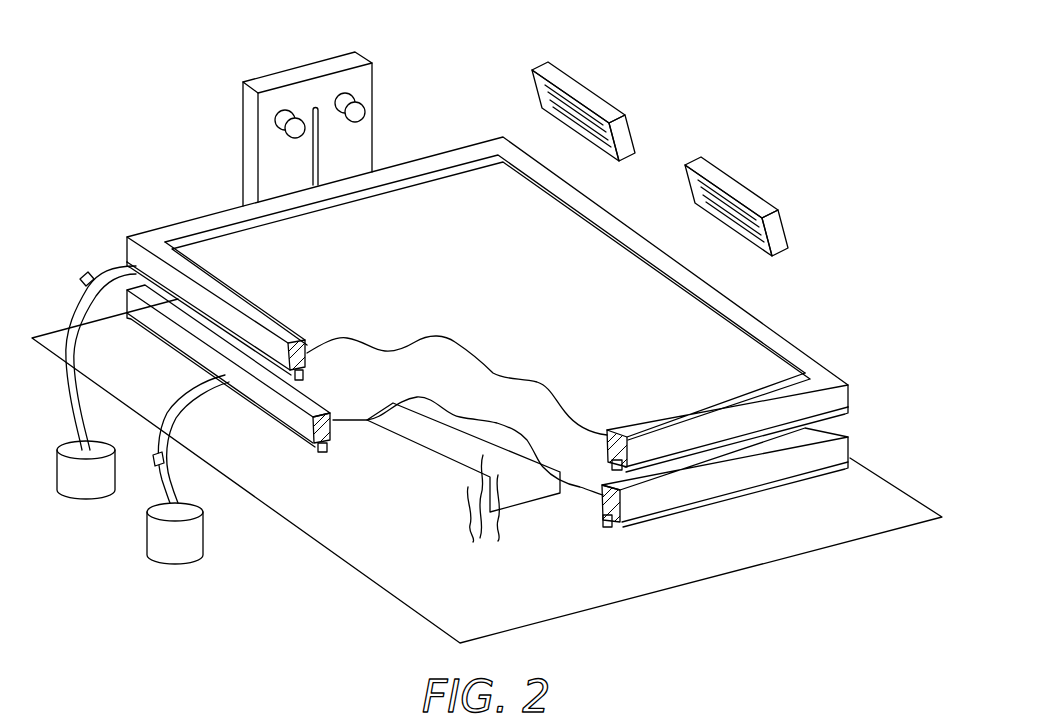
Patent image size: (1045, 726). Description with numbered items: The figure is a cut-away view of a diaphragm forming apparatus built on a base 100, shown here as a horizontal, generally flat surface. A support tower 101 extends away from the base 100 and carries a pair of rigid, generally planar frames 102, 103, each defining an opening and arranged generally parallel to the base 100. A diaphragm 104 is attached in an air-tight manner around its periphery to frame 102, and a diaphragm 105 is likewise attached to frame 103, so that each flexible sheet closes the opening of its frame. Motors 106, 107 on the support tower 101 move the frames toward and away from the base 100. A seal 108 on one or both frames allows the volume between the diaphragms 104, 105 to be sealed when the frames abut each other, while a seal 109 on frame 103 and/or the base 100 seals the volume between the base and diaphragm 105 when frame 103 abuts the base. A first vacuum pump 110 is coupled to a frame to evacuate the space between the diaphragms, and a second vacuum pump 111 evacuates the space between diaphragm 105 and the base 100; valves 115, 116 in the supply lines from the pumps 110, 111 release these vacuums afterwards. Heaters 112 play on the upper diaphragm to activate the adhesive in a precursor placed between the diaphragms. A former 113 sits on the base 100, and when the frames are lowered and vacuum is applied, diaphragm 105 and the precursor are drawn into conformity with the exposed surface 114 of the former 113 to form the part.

The base 100 is at (757, 566).
The support tower 101 is at (298, 68).
The frame 102 is at (800, 357).
The frame 103 is at (832, 432).
The diaphragm 104 is at (585, 268).
The diaphragm 105 is at (422, 382).
The motor 106 is at (276, 124).
The motor 107 is at (368, 108).
The seal 108 is at (308, 375).
The seal 109 is at (323, 453).
The first vacuum pump 110 is at (88, 497).
The second vacuum pump 111 is at (177, 562).
The heaters 112 is at (580, 88).
The former 113 is at (428, 470).
The exposed surface 114 is at (487, 510).
The valve 115 is at (80, 273).
The valve 116 is at (152, 466).